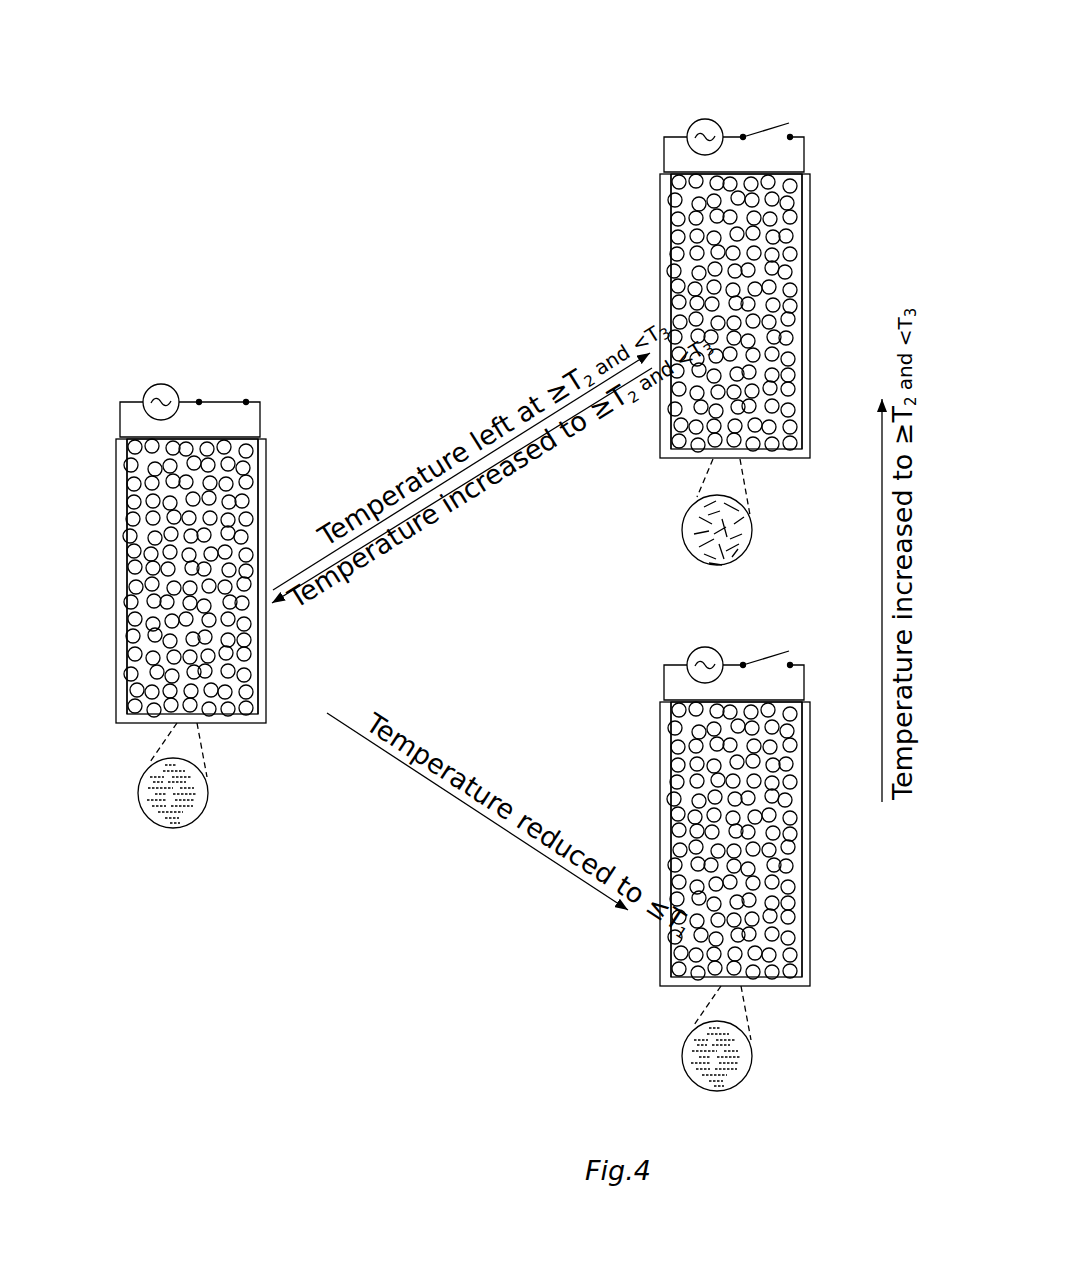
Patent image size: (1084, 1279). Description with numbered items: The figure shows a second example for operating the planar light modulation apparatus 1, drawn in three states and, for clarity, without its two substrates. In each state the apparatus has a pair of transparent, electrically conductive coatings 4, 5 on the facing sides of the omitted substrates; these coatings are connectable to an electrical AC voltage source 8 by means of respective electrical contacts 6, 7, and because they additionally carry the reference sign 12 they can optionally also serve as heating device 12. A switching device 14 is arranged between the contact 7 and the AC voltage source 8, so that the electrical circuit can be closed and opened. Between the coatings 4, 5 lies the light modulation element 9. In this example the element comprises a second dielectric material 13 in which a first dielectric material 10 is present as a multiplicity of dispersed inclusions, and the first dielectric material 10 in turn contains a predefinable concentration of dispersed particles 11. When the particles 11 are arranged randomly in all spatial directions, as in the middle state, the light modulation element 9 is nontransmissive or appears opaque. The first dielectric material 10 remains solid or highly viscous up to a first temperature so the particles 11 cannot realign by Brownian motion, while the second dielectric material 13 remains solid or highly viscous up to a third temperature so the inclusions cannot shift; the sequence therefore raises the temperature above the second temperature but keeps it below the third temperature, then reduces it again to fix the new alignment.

The light modulation apparatus 1 is at (283, 628).
The transparent, electrically conductive coating 4 is at (358, 575).
The transparent, electrically conductive coating 5 is at (590, 575).
The electrical contact 6 is at (388, 399).
The electrical contact 7 is at (527, 397).
The electrical AC voltage source 8 is at (427, 354).
The light modulation element 9 is at (120, 321).
The first dielectric material 10 is at (496, 643).
The particles 11 is at (479, 815).
The heating device 12 is at (484, 575).
The second dielectric material 13 is at (423, 575).
The switching device 14 is at (515, 363).